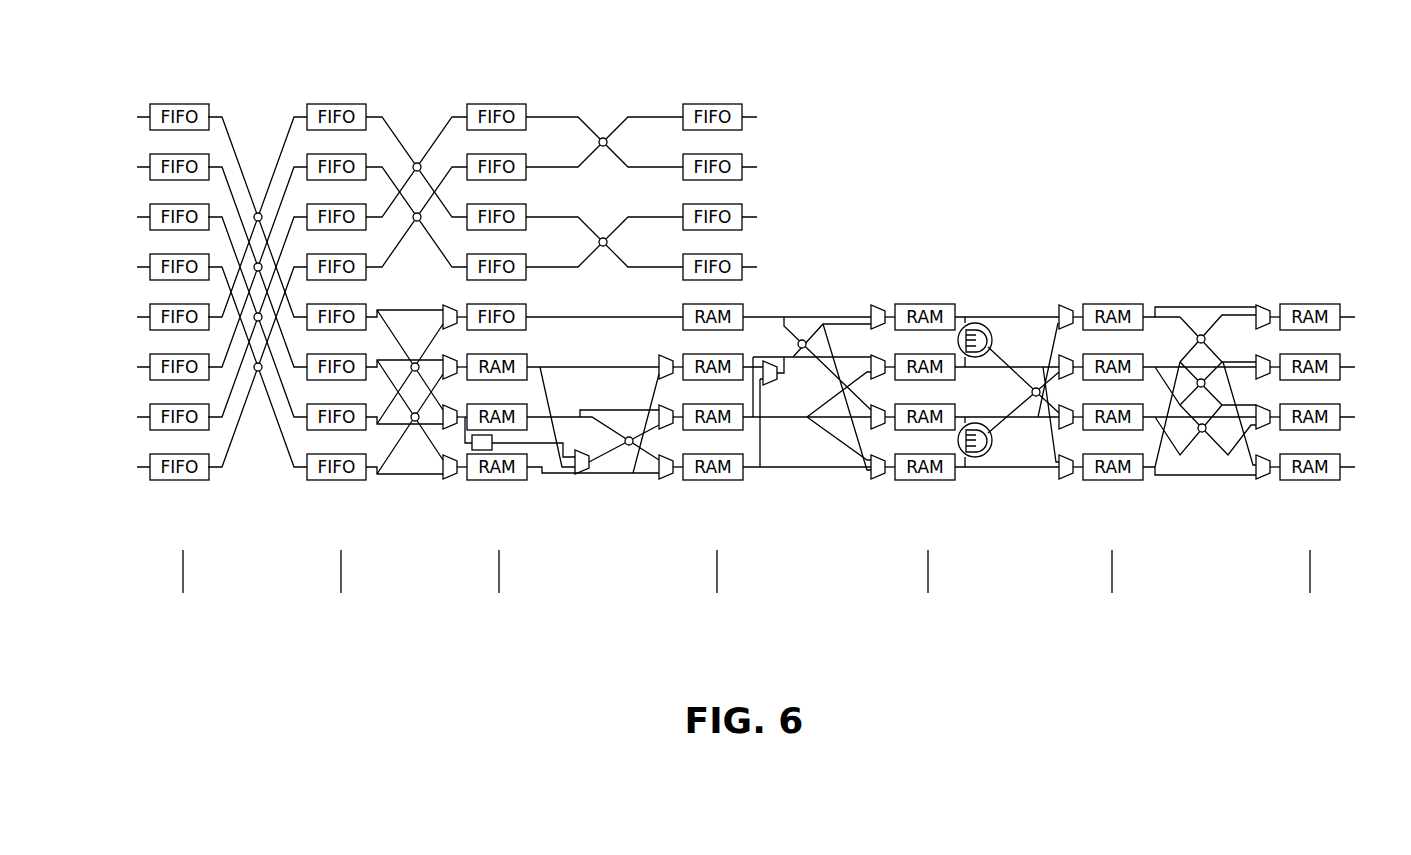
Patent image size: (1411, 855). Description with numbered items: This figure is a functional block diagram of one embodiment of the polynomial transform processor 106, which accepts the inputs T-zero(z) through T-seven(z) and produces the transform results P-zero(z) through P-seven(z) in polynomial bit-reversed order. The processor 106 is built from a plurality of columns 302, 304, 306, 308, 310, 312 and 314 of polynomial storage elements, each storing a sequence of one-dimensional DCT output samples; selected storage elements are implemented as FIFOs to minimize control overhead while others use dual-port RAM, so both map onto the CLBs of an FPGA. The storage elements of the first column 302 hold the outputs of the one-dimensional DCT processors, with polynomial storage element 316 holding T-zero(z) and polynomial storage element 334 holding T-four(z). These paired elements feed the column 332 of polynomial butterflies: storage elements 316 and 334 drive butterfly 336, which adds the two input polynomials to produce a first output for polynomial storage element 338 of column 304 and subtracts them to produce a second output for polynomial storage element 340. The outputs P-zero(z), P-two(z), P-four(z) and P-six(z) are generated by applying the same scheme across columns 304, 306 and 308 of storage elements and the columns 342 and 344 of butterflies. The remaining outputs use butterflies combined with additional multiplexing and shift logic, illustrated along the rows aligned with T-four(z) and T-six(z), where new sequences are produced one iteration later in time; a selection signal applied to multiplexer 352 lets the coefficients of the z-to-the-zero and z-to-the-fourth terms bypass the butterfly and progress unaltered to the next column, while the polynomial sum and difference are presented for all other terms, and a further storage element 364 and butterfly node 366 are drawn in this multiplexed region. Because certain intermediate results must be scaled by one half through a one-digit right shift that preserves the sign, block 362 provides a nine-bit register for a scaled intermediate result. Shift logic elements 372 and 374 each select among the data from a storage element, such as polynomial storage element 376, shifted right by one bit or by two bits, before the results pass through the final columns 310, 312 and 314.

The polynomial transform processor 106 is at (744, 315).
The column of polynomial storage elements 302 is at (177, 259).
The column of polynomial storage elements 304 is at (358, 259).
The column of polynomial storage elements 306 is at (499, 86).
The column of polynomial storage elements 308 is at (718, 86).
The column of polynomial storage elements 310 is at (943, 359).
The column of polynomial storage elements 312 is at (1117, 292).
The column of polynomial storage elements 314 is at (1314, 292).
The polynomial storage element 316 is at (210, 103).
The column of polynomial butterflies 332 is at (257, 288).
The polynomial storage element 334 is at (197, 303).
The butterfly 336 is at (258, 212).
The polynomial storage element 338 is at (368, 103).
The polynomial storage element 340 is at (348, 303).
The column of butterflies 342 is at (423, 134).
The column of butterflies 344 is at (602, 130).
The multiplexer 352 is at (446, 305).
The 9-bit register 362 is at (467, 449).
The RAM buffer 364 is at (510, 484).
The crossover node 366 is at (414, 363).
The shift logic element 372 is at (991, 340).
The shift logic element 374 is at (991, 441).
The polynomial storage element 376 is at (953, 300).